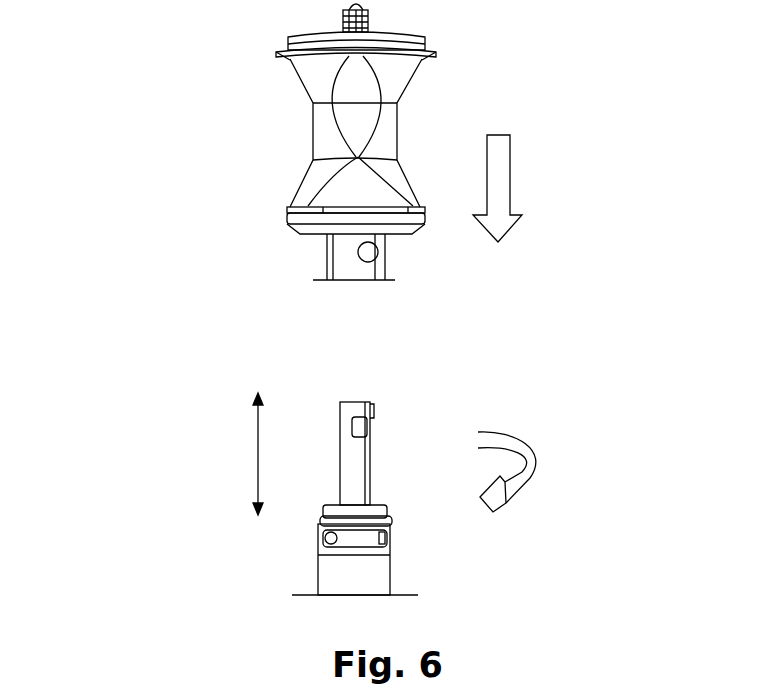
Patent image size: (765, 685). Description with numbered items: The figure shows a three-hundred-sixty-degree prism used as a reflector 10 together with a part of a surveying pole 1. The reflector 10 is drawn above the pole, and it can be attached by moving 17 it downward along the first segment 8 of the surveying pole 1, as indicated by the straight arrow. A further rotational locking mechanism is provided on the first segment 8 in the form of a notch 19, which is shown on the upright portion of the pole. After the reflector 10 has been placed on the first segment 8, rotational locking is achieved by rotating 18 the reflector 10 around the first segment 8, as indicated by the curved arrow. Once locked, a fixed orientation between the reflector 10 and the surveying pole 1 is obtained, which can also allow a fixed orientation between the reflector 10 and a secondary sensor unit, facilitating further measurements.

The surveying pole 1 is at (222, 543).
The first segment 8 is at (258, 443).
The reflector 10 is at (206, 162).
The moving 17 is at (508, 190).
The rotating 18 is at (532, 460).
The notch 19 is at (368, 433).